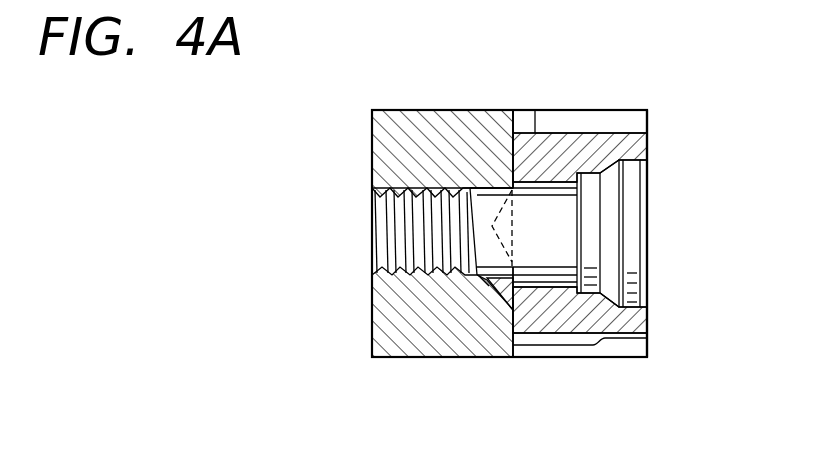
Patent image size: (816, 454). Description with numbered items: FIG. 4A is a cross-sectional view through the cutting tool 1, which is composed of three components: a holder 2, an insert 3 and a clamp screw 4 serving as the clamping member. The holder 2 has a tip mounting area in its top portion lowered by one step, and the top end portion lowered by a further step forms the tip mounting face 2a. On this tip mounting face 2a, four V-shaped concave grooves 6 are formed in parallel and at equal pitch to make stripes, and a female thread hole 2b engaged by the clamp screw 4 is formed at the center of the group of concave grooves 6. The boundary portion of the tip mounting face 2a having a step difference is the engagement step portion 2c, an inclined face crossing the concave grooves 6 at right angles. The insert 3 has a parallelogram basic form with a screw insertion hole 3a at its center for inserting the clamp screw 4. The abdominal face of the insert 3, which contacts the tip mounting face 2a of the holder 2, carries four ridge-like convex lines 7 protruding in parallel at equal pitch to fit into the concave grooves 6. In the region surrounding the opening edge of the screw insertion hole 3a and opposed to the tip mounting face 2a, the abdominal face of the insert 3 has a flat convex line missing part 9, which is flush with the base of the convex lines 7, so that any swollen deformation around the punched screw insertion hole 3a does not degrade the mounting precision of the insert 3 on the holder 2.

The cutting tool 1 is at (312, 139).
The holder 2 is at (424, 104).
The tip mounting face 2a is at (563, 138).
The female thread hole 2b is at (410, 204).
The engagement step portion 2c is at (523, 120).
The insert 3 is at (658, 320).
The screw insertion hole 3a is at (553, 188).
The clamp screw 4 is at (628, 257).
The concave grooves 6 is at (505, 292).
The convex lines 7 is at (532, 300).
The convex line missing part 9 is at (503, 138).